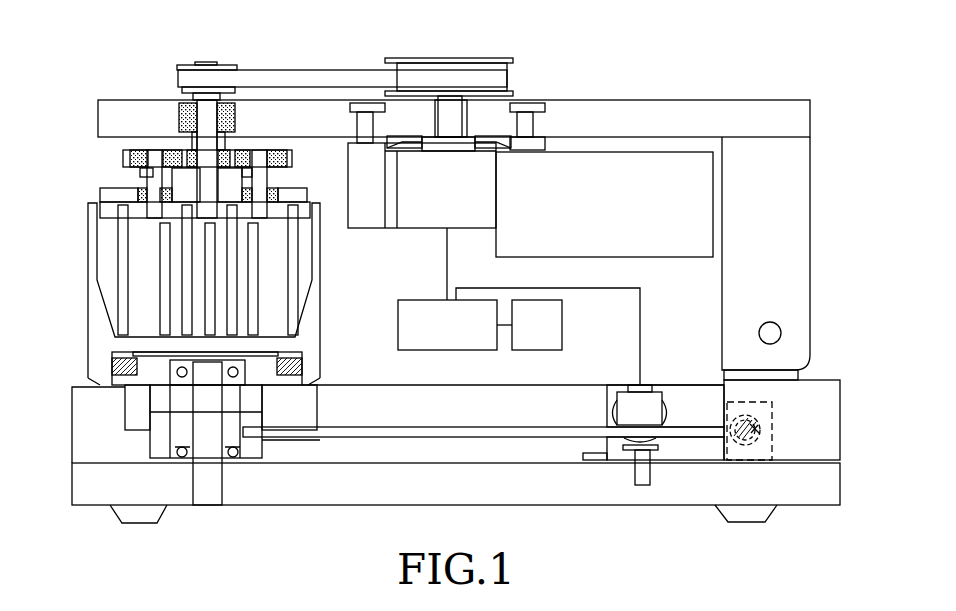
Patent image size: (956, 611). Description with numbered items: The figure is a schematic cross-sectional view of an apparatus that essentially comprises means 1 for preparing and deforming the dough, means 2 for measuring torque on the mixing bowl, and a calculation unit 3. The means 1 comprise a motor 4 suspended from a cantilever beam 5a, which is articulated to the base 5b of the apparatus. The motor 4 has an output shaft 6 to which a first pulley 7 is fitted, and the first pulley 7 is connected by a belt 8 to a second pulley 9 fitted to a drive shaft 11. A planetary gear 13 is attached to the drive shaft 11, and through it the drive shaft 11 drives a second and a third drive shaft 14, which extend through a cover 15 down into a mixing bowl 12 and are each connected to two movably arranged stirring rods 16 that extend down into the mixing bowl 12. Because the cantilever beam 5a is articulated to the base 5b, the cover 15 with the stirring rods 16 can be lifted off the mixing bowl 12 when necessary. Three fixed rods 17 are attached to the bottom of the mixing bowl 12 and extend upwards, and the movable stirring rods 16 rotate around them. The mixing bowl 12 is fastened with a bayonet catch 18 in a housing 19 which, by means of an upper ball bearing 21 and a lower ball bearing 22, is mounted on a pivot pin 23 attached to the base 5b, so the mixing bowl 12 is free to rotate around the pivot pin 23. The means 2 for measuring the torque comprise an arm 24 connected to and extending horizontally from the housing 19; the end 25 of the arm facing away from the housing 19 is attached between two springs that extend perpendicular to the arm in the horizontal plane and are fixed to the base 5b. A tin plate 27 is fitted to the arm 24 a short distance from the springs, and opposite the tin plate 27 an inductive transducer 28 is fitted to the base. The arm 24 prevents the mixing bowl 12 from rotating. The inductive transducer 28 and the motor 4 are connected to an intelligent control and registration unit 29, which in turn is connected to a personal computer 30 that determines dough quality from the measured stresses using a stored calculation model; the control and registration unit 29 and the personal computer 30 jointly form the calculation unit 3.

The means for preparing and deforming the dough 1 is at (76, 242).
The means for measuring torque 2 is at (350, 382).
The calculation unit 3 is at (416, 291).
The motor 4 is at (427, 216).
The cantilever beam 5a is at (795, 217).
The base 5b is at (825, 385).
The output shaft 6 is at (455, 113).
The first pulley 7 is at (467, 58).
The belt 8 is at (312, 70).
The second pulley 9 is at (183, 65).
The drive shaft 11 is at (207, 135).
The mixing bowl 12 is at (88, 270).
The planetary gear 13 is at (186, 144).
The second and third drive shafts 14 is at (153, 173).
The cover 15 is at (300, 192).
The stirring rods 16 is at (185, 281).
The fixed rods 17 is at (163, 308).
The bayonet catch 18 is at (112, 364).
The housing 19 is at (146, 390).
The upper ball bearing 21 is at (235, 376).
The lower ball bearing 22 is at (180, 458).
The pivot pin 23 is at (212, 483).
The arm 24 is at (423, 433).
The end of the arm 25 is at (775, 428).
The tin plate 27 is at (618, 408).
The inductive transducer 28 is at (640, 388).
The control and registration unit 29 is at (434, 338).
The personal computer 30 is at (527, 338).